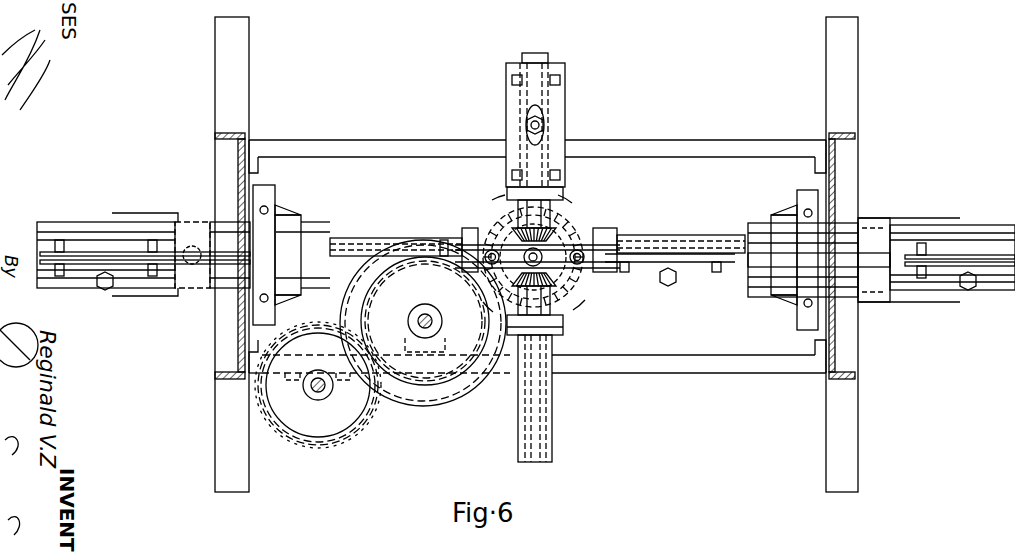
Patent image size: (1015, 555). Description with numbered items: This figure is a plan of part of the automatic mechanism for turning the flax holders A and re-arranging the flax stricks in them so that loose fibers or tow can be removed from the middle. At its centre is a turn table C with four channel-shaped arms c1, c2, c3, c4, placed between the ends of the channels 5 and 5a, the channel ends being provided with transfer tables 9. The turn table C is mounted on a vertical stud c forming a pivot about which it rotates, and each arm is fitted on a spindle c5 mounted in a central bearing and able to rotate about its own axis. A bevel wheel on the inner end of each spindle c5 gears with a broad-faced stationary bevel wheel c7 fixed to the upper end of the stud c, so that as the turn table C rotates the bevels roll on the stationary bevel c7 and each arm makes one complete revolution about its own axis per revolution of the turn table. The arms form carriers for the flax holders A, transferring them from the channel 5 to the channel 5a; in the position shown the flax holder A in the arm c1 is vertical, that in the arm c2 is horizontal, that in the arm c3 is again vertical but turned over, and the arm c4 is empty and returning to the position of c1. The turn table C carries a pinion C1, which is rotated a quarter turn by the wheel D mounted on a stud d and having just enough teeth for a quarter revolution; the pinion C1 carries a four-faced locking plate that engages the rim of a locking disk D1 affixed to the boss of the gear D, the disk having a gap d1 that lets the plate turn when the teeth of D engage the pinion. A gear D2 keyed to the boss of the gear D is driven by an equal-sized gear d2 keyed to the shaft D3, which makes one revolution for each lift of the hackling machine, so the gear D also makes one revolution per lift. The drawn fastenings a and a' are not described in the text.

The channel 5 is at (985, 245).
The channel 5a is at (88, 288).
The transfer table 9 is at (300, 226).
The flax holder A is at (560, 128).
The sleeve coupling a is at (212, 274).
The clamping bolt a' is at (541, 215).
The turn table C is at (466, 232).
The vertical stud c is at (560, 238).
The pinion C1 is at (510, 212).
The arm c1 is at (655, 240).
The arm c2 is at (543, 60).
The arm c3 is at (345, 240).
The arm c4 is at (535, 396).
The spindle c5 is at (498, 222).
The stationary bevel wheel c7 is at (572, 275).
The wheel D is at (432, 262).
The locking disk D1 is at (372, 258).
The gear D2 is at (423, 385).
The shaft D3 is at (320, 400).
The stud d is at (433, 321).
The gap d1 is at (441, 240).
The gear d2 is at (350, 440).